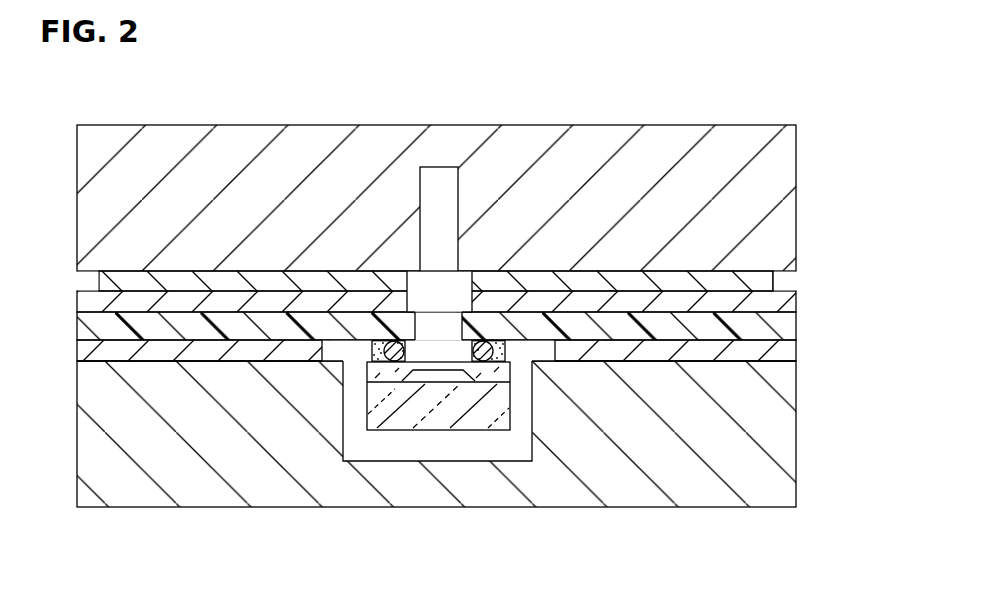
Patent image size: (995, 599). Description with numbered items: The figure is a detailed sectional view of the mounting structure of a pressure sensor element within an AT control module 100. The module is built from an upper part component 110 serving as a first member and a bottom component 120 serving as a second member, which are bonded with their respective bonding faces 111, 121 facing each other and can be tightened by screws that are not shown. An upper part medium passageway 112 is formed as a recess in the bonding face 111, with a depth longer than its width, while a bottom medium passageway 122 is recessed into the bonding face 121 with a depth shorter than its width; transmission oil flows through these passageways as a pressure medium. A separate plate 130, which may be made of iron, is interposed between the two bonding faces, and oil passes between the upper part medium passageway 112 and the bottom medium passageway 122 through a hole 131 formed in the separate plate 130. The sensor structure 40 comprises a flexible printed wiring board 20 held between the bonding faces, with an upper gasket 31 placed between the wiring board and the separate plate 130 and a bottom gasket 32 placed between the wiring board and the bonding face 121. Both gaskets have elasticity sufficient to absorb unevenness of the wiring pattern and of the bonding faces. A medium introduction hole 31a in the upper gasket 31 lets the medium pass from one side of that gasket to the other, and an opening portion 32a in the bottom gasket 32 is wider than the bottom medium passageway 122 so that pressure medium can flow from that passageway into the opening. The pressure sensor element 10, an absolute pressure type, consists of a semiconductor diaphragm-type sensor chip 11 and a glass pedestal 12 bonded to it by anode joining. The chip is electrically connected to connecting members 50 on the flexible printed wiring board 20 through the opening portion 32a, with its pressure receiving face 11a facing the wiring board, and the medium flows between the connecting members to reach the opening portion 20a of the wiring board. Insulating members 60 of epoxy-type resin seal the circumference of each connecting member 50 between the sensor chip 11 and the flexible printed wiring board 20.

The AT control module 100 is at (777, 127).
The upper part component 110 is at (782, 178).
The bonding face 111 is at (783, 272).
The upper part medium passageway 112 is at (433, 182).
The bottom component 120 is at (783, 420).
The bonding face 121 is at (788, 350).
The bottom medium passageway 122 is at (405, 450).
The separate plate 130 is at (640, 283).
The hole 131 is at (420, 283).
The flexible printed wiring board 20 is at (790, 330).
The opening portion 20a is at (455, 325).
The upper gasket 31 is at (685, 303).
The medium introduction hole 31a is at (428, 303).
The bottom gasket 32 is at (683, 355).
The opening portion 32a is at (330, 348).
The sensor structure 40 is at (722, 362).
The connecting member 50 is at (385, 355).
The insulating member 60 is at (372, 344).
The pressure sensor element 10 is at (506, 535).
The sensor chip 11 is at (486, 375).
The pressure receiving face 11a is at (440, 352).
The glass pedestal 12 is at (445, 415).